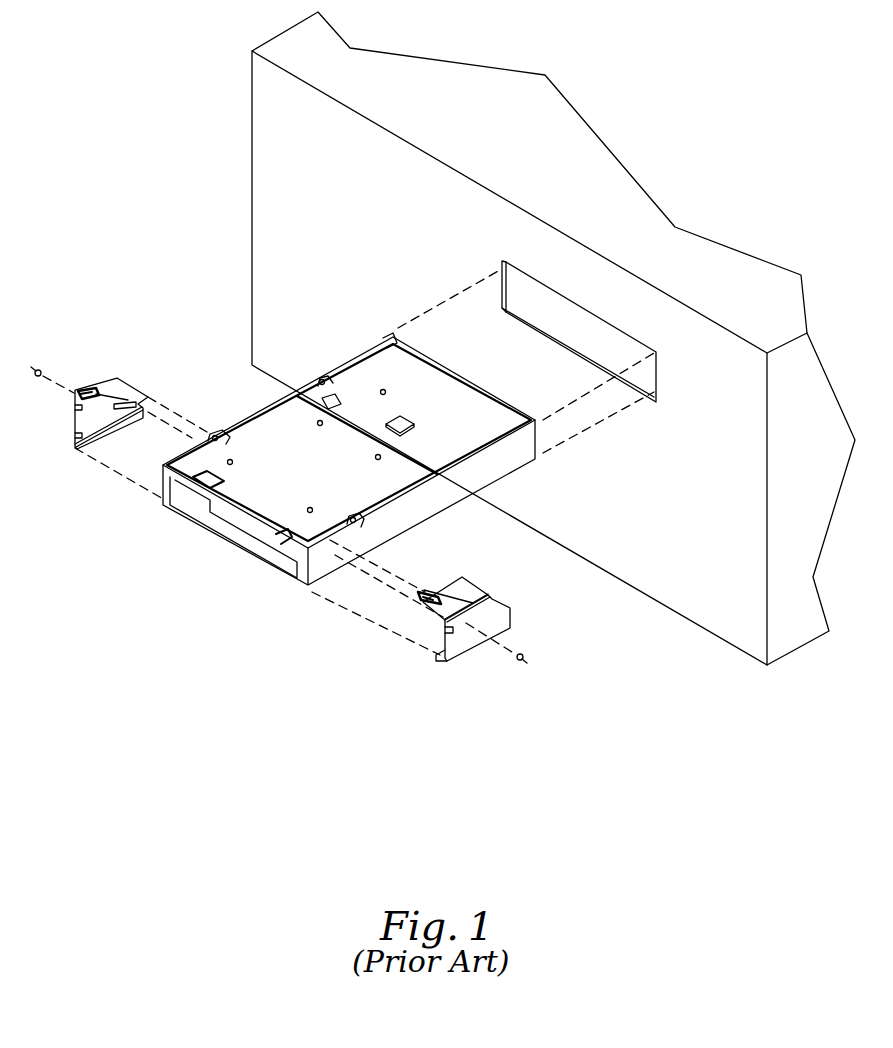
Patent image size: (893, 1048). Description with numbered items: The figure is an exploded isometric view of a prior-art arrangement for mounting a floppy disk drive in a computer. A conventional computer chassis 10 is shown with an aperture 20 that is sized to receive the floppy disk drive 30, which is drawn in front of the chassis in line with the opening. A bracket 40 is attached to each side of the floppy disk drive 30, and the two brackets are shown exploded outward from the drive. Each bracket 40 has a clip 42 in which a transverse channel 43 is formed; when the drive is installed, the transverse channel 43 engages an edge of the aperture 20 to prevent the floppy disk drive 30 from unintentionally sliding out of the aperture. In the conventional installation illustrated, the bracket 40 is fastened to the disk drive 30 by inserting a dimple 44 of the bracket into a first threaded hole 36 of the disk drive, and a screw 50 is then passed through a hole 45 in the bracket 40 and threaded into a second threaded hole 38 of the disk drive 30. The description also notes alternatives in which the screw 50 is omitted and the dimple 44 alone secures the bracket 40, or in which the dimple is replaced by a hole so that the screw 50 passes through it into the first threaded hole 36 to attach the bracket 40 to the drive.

The computer chassis 10 is at (263, 191).
The aperture 20 is at (552, 305).
The floppy disk drive 30 is at (308, 590).
The first threaded hole 36 is at (215, 436).
The second threaded hole 38 is at (190, 466).
The bracket 40 is at (280, 539).
The clip 42 is at (97, 390).
The transverse channel 43 is at (80, 392).
The dimple 44 is at (118, 382).
The hole 45 is at (73, 413).
The screw 50 is at (40, 368).